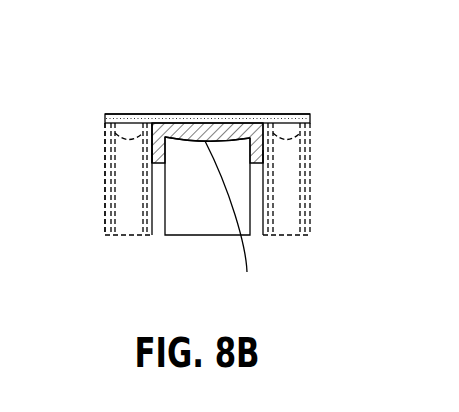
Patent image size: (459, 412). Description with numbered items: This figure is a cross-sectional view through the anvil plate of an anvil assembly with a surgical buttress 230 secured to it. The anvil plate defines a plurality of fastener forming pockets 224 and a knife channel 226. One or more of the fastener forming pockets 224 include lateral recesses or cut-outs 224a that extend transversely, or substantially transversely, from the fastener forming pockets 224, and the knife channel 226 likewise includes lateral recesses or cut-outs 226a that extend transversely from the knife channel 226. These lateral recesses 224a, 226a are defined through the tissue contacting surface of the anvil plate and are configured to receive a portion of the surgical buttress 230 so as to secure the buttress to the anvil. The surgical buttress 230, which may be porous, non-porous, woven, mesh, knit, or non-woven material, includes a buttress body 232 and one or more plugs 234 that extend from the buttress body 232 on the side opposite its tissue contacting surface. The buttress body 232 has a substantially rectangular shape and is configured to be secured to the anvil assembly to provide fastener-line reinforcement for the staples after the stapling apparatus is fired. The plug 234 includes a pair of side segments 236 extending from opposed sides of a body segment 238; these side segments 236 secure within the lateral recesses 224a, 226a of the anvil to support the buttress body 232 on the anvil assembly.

The fastener forming pocket 224 is at (103, 223).
The lateral recess 224a is at (103, 195).
The knife channel 226 is at (204, 237).
The lateral recess 226a is at (150, 128).
The surgical buttress 230 is at (223, 108).
The buttress body 232 is at (288, 115).
The plug 234 is at (171, 125).
The side segment 236 is at (152, 152).
The body segment 238 is at (233, 222).